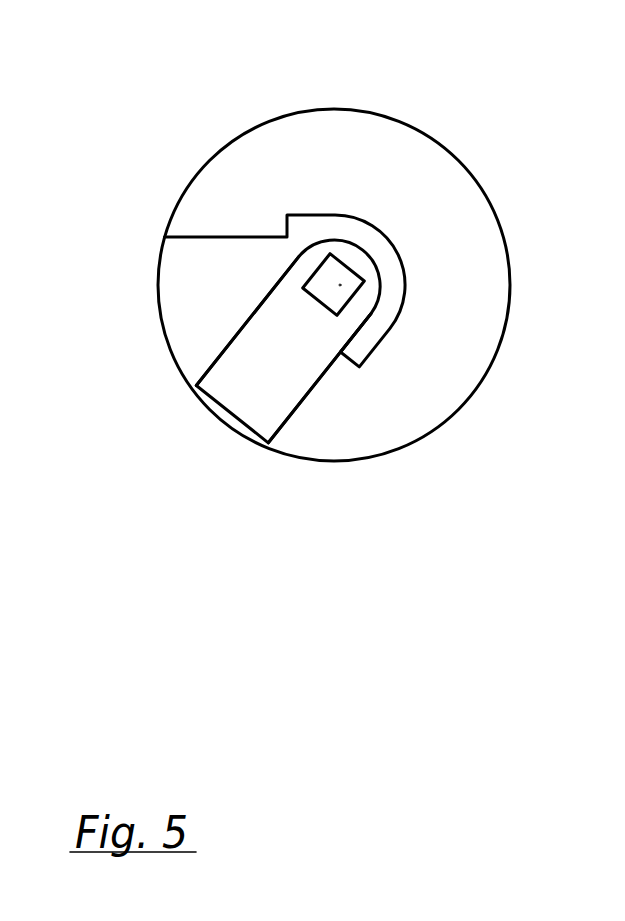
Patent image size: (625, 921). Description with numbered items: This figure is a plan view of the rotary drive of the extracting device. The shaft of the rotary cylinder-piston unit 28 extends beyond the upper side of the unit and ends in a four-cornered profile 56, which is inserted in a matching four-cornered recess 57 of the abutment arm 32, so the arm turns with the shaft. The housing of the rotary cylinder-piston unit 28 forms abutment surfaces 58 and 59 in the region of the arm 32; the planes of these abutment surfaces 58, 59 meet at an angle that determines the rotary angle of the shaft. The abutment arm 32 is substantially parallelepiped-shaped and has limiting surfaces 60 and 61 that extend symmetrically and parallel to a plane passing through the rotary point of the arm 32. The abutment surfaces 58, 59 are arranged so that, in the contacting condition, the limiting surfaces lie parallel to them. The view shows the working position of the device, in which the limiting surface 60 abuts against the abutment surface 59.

The rotary cylinder-piston unit 28 is at (445, 392).
The abutment arm 32 is at (255, 380).
The four-cornered profile 56 is at (340, 285).
The four-cornered recess 57 is at (358, 272).
The abutment surface 58 is at (222, 242).
The abutment surface 59 is at (333, 377).
The limiting surface 60 is at (298, 395).
The limiting surface 61 is at (233, 340).